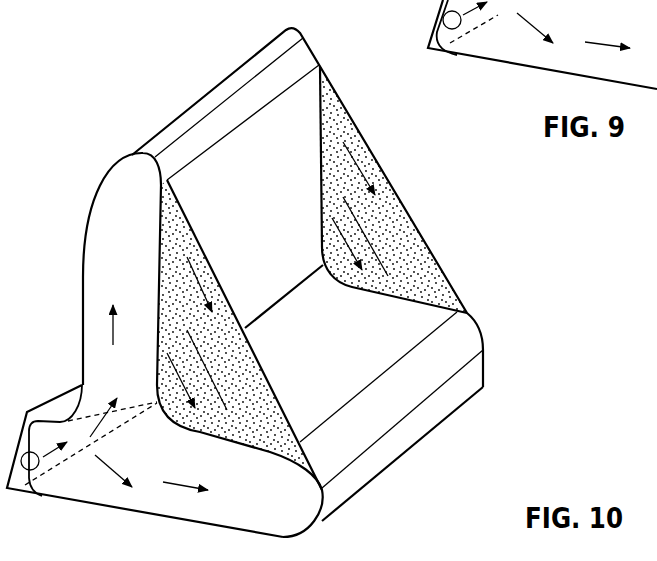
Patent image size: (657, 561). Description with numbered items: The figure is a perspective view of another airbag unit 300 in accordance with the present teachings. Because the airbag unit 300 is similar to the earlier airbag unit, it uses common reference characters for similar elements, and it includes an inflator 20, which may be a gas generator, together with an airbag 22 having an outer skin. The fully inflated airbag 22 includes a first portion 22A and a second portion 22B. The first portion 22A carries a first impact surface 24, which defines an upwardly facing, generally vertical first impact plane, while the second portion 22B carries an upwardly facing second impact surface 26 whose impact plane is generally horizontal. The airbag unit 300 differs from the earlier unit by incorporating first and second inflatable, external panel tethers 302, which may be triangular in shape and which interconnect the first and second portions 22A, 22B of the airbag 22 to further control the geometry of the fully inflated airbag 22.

In FIG. 10, the airbag unit 300 is at (177, 85).
In FIG. 10, the airbag 22 is at (238, 62).
In FIG. 10, the first impact surface 24 is at (258, 215).
In FIG. 10, the second impact surface 26 is at (337, 372).
In FIG. 10, the first portion 22A is at (422, 322).
In FIG. 10, the second portion 22B is at (288, 170).
In FIG. 10, the inflatable external panel tethers 302 is at (393, 203).
In FIG. 10, the inflator 20 is at (40, 465).
In FIG. 9, the inflator 20 is at (460, 26).